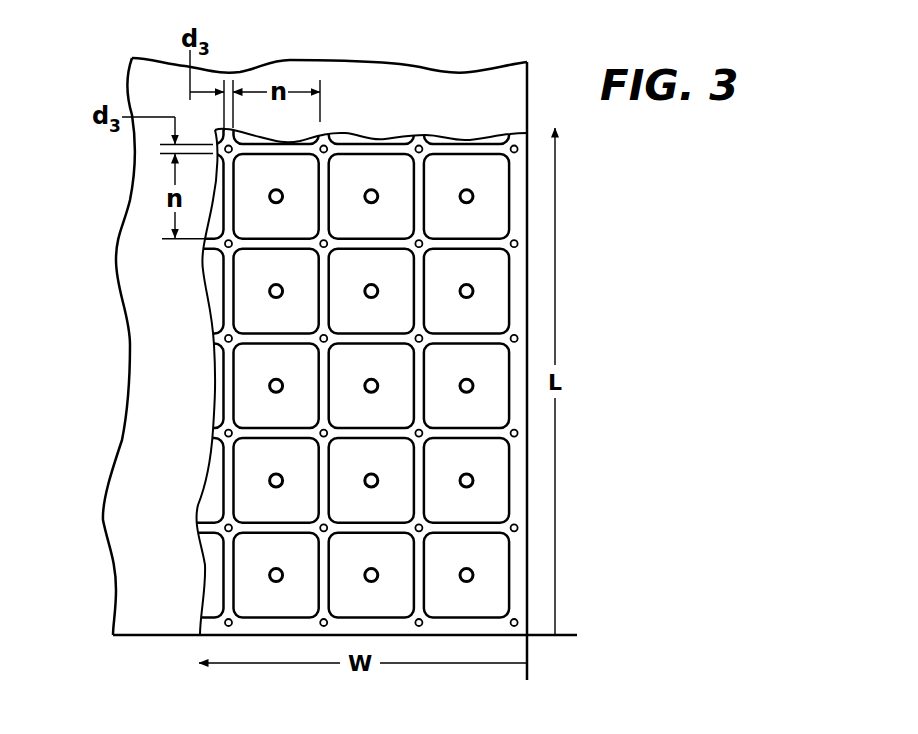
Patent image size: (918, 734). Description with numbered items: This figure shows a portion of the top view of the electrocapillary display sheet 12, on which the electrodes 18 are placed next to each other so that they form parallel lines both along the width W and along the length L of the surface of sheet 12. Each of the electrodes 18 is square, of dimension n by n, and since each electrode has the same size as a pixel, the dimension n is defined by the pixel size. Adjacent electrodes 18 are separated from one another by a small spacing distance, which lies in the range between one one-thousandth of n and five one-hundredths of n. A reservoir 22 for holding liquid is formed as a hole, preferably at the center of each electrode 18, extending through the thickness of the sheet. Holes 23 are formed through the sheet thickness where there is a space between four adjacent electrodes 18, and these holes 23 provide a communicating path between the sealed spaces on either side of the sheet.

The sheet 12 is at (346, 62).
The electrodes 18 is at (399, 172).
The reservoirs 22 is at (470, 583).
The holes 23 is at (520, 624).